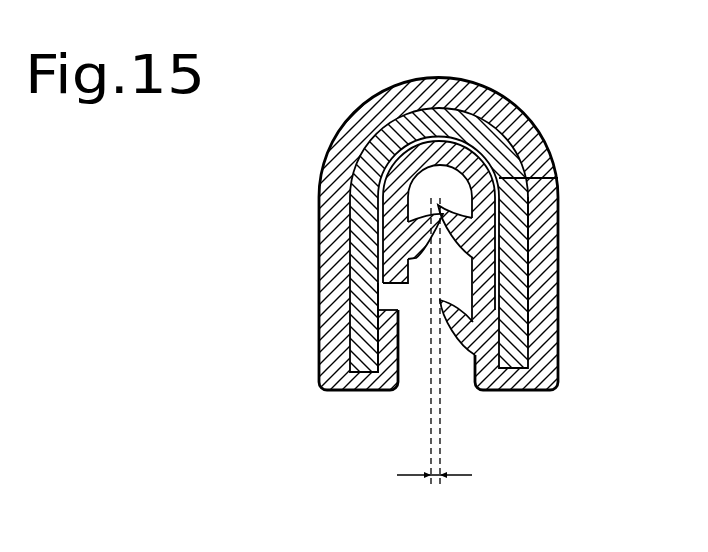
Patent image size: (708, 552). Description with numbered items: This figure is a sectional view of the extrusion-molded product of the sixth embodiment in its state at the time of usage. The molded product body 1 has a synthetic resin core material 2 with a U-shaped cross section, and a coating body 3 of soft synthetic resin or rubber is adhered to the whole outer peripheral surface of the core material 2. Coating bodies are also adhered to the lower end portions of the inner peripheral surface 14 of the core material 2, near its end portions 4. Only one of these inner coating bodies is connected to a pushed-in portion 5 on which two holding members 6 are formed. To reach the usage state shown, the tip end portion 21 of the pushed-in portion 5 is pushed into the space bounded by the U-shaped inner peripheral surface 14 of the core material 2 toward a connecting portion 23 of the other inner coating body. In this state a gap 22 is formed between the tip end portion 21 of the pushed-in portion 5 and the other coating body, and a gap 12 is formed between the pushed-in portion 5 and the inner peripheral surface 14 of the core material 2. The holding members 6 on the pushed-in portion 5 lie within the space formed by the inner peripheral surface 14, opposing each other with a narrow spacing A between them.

The molded product body 1 is at (320, 150).
The synthetic resin core material 2 is at (493, 137).
The coating body 3 is at (545, 232).
The end portions of the core material 4 is at (355, 392).
The pushed-in portion 5 is at (487, 262).
The holding members 6 is at (473, 352).
The gap 12 is at (558, 178).
The inner peripheral surface of the core material 14 is at (393, 348).
The tip end portion of the pushed-in portion 21 is at (390, 272).
The gap 22 is at (393, 293).
The connecting portion 23 is at (387, 302).
The narrow spacing A is at (438, 490).